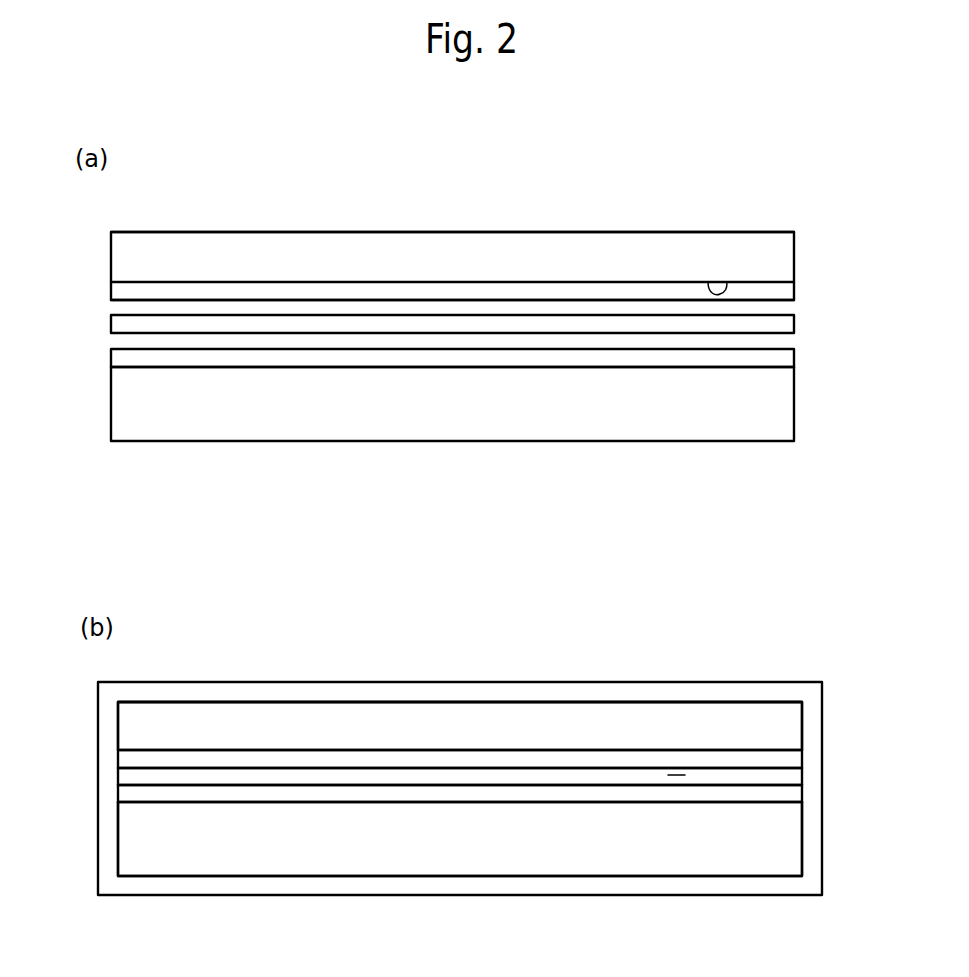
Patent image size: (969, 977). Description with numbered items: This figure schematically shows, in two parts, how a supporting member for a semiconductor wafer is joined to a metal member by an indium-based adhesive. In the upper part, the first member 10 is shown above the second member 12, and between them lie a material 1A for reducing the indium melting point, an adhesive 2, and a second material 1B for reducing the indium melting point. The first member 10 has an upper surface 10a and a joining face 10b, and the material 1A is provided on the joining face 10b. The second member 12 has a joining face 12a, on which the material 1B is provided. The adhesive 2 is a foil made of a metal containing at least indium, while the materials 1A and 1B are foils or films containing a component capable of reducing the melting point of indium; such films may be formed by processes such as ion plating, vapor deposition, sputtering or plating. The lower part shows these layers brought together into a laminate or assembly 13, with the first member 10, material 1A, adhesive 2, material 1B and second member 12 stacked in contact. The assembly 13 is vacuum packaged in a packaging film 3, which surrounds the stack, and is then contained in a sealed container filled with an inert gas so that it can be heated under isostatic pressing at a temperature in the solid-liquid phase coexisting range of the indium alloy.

The first member 10 is at (773, 260).
The first surface of substrate 10a is at (637, 232).
The joining face 10b is at (728, 282).
The material for reducing the indium melting point 1A is at (778, 292).
The adhesive 2 is at (782, 324).
The material for reducing the indium melting point 1B is at (780, 358).
The second member 12 is at (778, 417).
The joining face 12a is at (559, 366).
The laminate 13 is at (108, 703).
The packaging film 3 is at (810, 880).